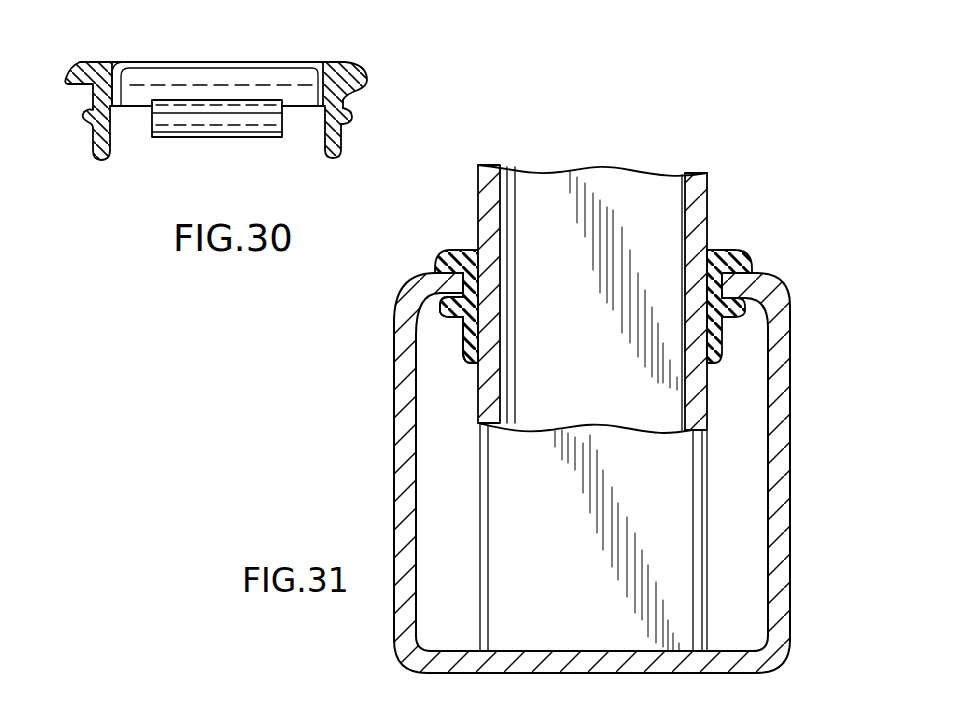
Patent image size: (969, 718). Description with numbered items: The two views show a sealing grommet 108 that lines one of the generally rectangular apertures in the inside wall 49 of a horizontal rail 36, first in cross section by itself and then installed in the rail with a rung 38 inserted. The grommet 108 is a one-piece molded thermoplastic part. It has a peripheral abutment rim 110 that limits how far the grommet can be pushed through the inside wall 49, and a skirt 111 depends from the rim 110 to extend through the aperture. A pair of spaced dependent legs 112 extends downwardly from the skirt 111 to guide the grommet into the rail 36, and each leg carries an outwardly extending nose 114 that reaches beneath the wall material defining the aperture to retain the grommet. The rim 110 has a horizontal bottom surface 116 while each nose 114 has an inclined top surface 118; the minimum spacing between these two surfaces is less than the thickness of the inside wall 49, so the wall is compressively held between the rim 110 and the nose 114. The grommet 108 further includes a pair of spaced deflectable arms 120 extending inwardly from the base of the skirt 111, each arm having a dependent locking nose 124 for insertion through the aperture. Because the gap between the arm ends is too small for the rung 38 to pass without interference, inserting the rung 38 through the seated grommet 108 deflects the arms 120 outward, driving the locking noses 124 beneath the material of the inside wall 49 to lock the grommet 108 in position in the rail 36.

In FIG. 31, the lower rail 36 is at (394, 456).
In FIG. 31, the rung 38 is at (708, 200).
In FIG. 31, the inside wall 49 is at (446, 285).
In FIG. 31, the sealing grommet 108 is at (752, 256).
In FIG. 30, the peripheral abutment rim 110 is at (300, 62).
In FIG. 31, the peripheral abutment rim 110 is at (444, 252).
In FIG. 30, the skirt 111 is at (342, 100).
In FIG. 30, the dependent legs 112 is at (343, 150).
In FIG. 30, the outwardly extending nose 114 is at (343, 121).
In FIG. 30, the horizontal bottom surface 116 is at (362, 97).
In FIG. 30, the inclined top surface 118 is at (342, 103).
In FIG. 31, the deflectable arms 120 is at (463, 353).
In FIG. 30, the locking nose 124 is at (213, 137).
In FIG. 31, the locking nose 124 is at (442, 316).